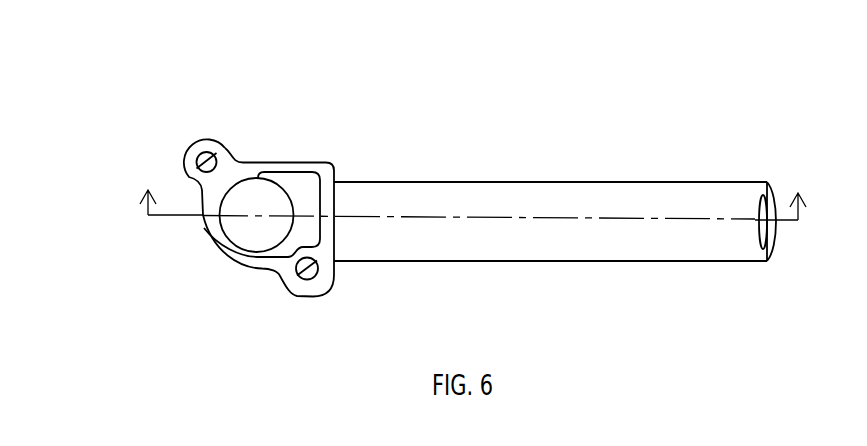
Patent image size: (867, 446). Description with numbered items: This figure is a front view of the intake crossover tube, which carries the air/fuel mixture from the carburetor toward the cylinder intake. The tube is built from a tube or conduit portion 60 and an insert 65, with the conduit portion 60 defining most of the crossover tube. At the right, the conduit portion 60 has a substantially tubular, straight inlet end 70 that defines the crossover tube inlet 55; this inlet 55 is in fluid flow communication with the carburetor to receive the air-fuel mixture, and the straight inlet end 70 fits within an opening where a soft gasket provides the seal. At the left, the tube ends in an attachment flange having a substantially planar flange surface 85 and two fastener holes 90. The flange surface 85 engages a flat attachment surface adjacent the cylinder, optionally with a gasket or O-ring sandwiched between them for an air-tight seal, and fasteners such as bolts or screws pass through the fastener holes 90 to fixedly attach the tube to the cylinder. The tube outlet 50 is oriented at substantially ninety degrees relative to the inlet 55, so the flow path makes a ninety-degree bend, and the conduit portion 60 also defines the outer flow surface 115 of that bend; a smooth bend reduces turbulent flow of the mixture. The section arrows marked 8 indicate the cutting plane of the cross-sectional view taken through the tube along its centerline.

The tube outlet 50 is at (205, 230).
The crossover tube inlet 55 is at (757, 222).
The conduit portion 60 is at (452, 210).
The insert 65 is at (300, 185).
The inlet end 70 is at (623, 205).
The flange surface 85 is at (242, 167).
The fastener holes 90 is at (218, 150).
The outer flow surface 115 is at (233, 200).
The section line 8- 8 is at (476, 197).